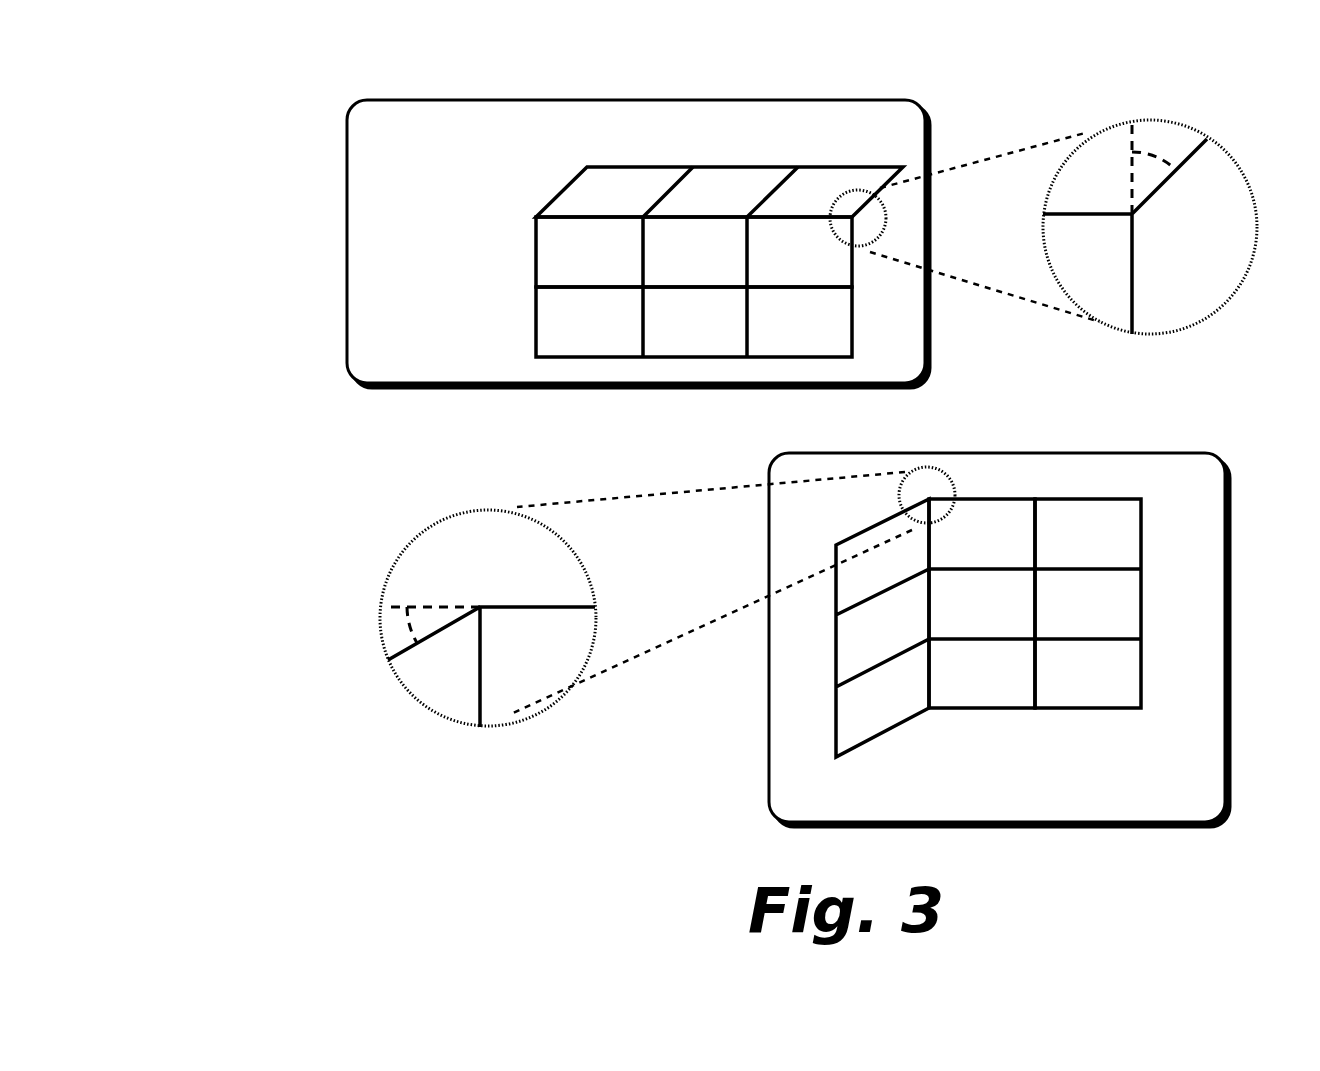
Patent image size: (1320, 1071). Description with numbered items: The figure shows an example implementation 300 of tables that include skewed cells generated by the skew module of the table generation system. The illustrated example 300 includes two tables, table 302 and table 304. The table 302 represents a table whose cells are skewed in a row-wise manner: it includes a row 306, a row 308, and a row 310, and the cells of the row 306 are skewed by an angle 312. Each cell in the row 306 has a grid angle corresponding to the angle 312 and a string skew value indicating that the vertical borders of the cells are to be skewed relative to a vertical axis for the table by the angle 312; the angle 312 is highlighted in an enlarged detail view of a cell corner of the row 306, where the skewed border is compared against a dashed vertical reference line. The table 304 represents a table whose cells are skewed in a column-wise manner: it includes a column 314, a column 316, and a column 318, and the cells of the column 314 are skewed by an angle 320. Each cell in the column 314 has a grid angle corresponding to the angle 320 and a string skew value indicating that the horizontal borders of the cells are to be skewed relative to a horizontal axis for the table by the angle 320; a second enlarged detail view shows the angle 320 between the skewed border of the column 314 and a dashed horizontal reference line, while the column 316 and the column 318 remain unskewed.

The example implementation 300 is at (243, 75).
The table 302 is at (617, 134).
The table 304 is at (977, 485).
The row 306 is at (515, 190).
The row 308 is at (515, 252).
The row 310 is at (515, 322).
The angle 312 is at (1157, 140).
The column 314 is at (892, 762).
The column 316 is at (990, 727).
The column 318 is at (1095, 727).
The angle 320 is at (398, 640).